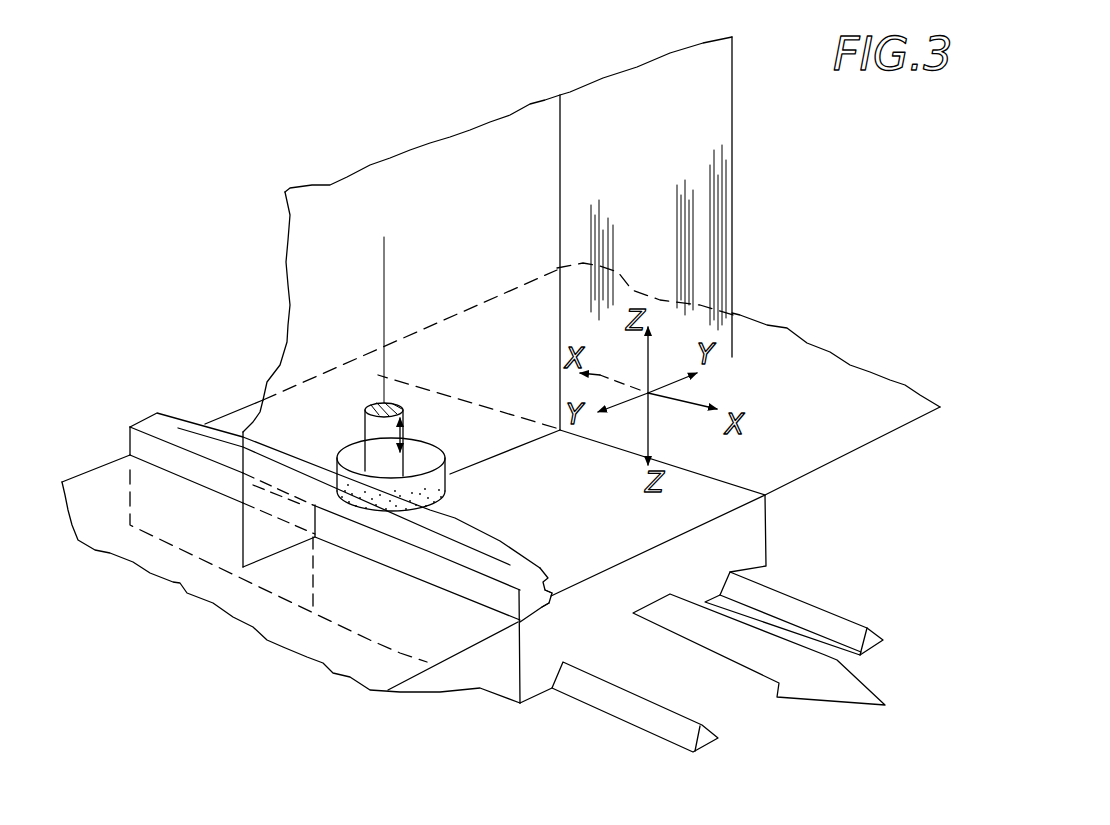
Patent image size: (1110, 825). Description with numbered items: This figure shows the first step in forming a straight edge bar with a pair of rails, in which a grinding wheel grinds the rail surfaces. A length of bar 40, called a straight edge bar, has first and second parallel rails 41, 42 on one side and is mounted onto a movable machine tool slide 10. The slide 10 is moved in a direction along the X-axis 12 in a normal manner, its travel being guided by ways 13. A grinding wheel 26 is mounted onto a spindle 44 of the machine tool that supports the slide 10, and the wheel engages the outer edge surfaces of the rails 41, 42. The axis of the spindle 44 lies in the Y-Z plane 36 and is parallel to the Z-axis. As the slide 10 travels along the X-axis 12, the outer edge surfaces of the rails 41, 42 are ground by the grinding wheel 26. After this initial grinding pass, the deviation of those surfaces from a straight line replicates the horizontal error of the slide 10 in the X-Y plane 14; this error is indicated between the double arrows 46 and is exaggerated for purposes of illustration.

The machine tool slide 10 is at (750, 533).
The X-axis 12 is at (777, 683).
The ways 13 is at (663, 727).
The X-Y plane 14 is at (818, 455).
The grinding wheel 26 is at (420, 460).
The Y-Z plane 36 is at (712, 134).
The bar 40 is at (533, 607).
The first rail 41 is at (555, 590).
The second rail 42 is at (551, 603).
The spindle 44 is at (405, 418).
The double arrows 46 is at (383, 543).